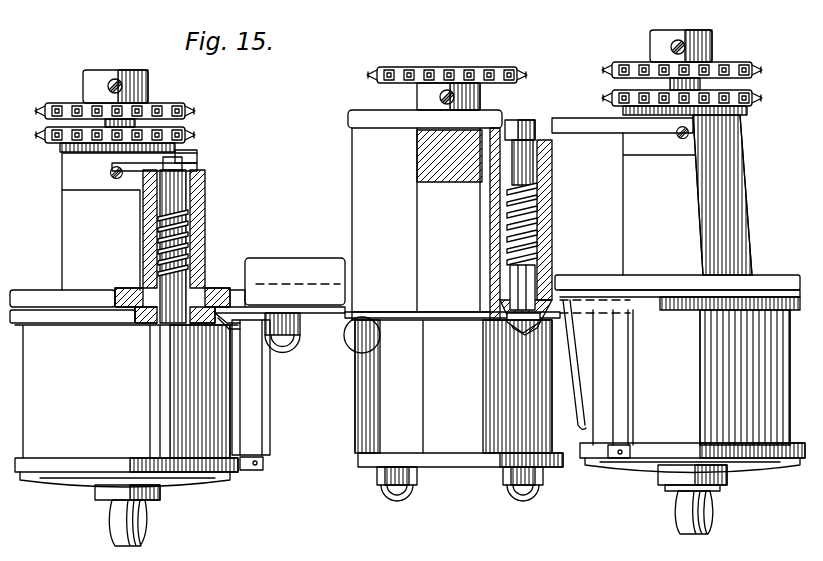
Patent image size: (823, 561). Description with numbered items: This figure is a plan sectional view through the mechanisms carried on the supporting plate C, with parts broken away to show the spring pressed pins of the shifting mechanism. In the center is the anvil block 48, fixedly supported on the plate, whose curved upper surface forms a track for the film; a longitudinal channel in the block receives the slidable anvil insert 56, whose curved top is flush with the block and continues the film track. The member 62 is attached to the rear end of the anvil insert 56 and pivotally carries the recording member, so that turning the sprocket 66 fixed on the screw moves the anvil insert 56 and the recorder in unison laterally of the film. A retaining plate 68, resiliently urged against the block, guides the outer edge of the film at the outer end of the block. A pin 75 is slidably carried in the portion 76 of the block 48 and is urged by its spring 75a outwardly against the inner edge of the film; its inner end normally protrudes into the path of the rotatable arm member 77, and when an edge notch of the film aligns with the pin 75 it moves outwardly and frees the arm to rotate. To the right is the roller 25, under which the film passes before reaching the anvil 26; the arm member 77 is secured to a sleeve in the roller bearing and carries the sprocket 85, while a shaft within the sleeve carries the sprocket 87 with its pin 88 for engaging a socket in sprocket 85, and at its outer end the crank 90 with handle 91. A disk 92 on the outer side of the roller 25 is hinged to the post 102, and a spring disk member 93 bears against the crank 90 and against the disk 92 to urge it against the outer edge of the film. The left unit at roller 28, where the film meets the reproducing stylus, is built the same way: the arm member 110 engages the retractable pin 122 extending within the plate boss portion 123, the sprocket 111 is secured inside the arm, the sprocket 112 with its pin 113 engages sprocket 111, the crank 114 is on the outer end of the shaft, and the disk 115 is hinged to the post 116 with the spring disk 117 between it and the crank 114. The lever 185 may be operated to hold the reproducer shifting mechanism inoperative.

The roller 25 is at (677, 280).
The anvil 26 is at (510, 403).
The roller 28 is at (126, 391).
The anvil block 48 is at (425, 215).
The anvil insert 56 is at (448, 385).
The member 62 is at (417, 148).
The sprocket 66 is at (480, 66).
The retaining plate 68 is at (372, 462).
The pin 75 is at (552, 160).
The spring 75a is at (553, 236).
The portion of block 76 is at (553, 189).
The arm member 77 is at (588, 124).
The sprocket 85 is at (745, 107).
The sprocket 87 is at (703, 37).
The pin 88 is at (707, 73).
The crank 90 is at (718, 486).
The handle 91 is at (712, 529).
The disk 92 is at (781, 460).
The spring disk member 93 is at (660, 473).
The post 102 is at (605, 377).
The arm member 110 is at (75, 165).
The sprocket 111 is at (196, 135).
The sprocket 112 is at (186, 103).
The pin 113 is at (143, 115).
The crank 114 is at (148, 498).
The disk 115 is at (98, 467).
The post 116 is at (253, 410).
The spring disk 117 is at (197, 480).
The retractable pin 122 is at (205, 181).
The plate boss portion 123 is at (202, 227).
The lever 185 is at (334, 315).
The supporting plate C is at (588, 283).